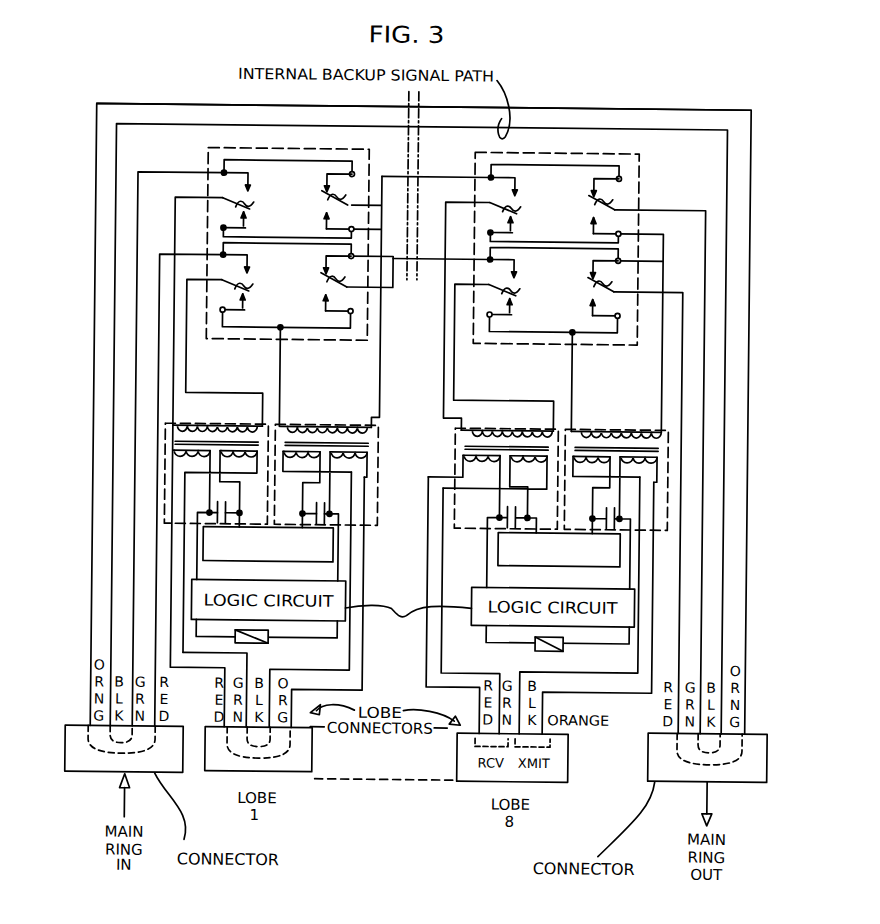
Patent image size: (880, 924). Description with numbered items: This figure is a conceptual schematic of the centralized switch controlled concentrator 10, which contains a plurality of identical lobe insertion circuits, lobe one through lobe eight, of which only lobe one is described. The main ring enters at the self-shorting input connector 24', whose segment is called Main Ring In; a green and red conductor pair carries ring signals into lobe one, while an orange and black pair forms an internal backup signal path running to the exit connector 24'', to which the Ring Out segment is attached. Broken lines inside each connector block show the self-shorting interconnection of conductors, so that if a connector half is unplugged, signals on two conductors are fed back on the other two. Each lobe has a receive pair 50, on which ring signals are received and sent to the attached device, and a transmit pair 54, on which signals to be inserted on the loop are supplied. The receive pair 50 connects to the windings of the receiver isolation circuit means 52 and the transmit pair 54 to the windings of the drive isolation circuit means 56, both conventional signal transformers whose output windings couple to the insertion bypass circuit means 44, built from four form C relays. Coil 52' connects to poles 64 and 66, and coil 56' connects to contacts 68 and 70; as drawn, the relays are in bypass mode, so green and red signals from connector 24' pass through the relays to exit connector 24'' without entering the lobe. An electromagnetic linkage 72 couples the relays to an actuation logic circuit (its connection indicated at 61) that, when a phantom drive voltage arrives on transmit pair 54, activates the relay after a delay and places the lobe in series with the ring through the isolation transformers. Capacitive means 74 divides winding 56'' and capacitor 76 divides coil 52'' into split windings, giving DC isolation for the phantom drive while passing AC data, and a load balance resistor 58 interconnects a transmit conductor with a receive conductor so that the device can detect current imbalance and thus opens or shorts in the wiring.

The concentrator 10 is at (766, 272).
The input connector 24' is at (118, 732).
The exit connector 24'' is at (715, 745).
The insertion bypass circuit means 44 is at (218, 151).
The receive pair 50 is at (188, 680).
The receiver isolation circuit means 52 is at (361, 526).
The coil 52' is at (218, 402).
The coil 52'' is at (216, 421).
The transmit pair 54 is at (380, 675).
The drive isolation circuit means 56 is at (471, 502).
The coil 56' is at (471, 405).
The windings 56'' is at (326, 422).
The load balance circuit 58 is at (334, 556).
The logic circuit interconnection 61 is at (408, 603).
The pole 64 is at (248, 282).
The pole 66 is at (246, 200).
The contact 68 is at (326, 283).
The contact 70 is at (324, 201).
The electromagnetic linkage 72 is at (258, 646).
The capacitive means 74 is at (317, 505).
The capacitor 76 is at (222, 504).